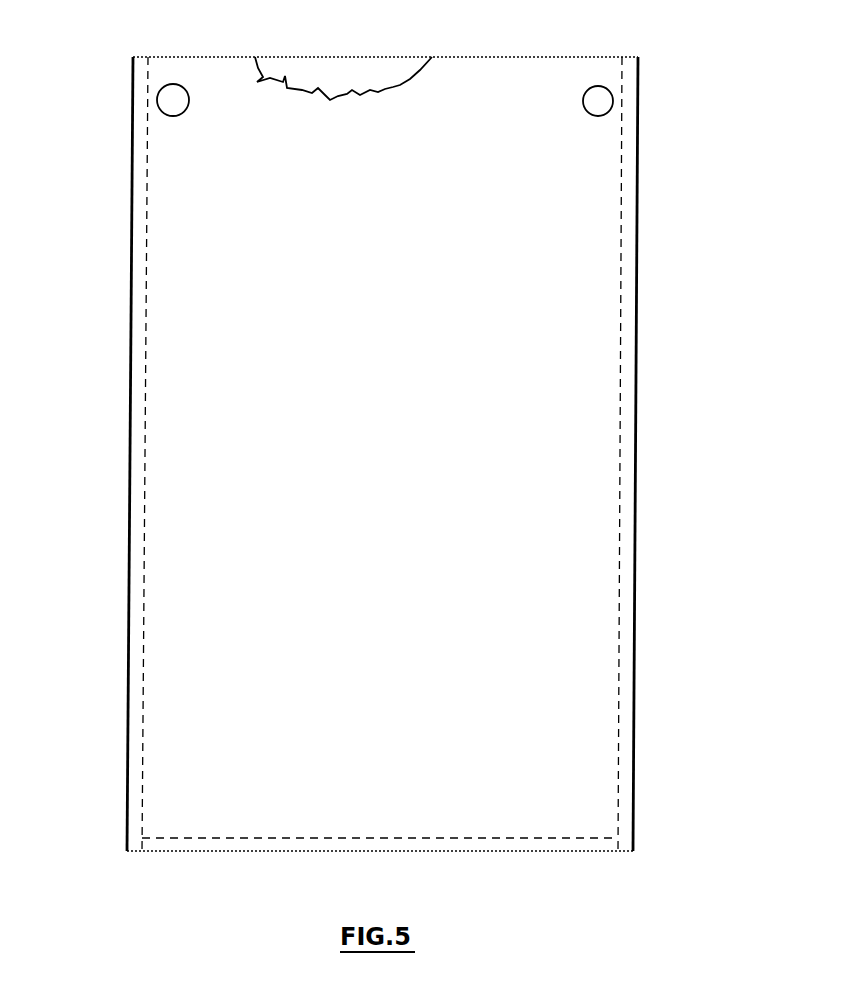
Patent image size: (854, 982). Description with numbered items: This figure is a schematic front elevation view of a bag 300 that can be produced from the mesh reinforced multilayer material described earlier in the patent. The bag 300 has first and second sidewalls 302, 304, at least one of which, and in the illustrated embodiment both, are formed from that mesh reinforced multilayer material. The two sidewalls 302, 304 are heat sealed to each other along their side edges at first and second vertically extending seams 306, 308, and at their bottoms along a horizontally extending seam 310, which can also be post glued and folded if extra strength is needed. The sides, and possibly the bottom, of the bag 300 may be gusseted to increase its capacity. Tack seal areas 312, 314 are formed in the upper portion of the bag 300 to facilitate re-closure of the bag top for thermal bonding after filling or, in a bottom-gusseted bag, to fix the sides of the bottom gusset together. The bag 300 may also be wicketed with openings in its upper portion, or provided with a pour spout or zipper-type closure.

The bag 300 is at (400, 453).
The first sidewall 302 is at (402, 493).
The second sidewall 304 is at (348, 80).
The first vertically extending seam 306 is at (128, 550).
The second vertically extending seam 308 is at (627, 578).
The horizontally extending seam 310 is at (497, 845).
The tack seal area 312 is at (157, 93).
The tack seal area 314 is at (613, 100).